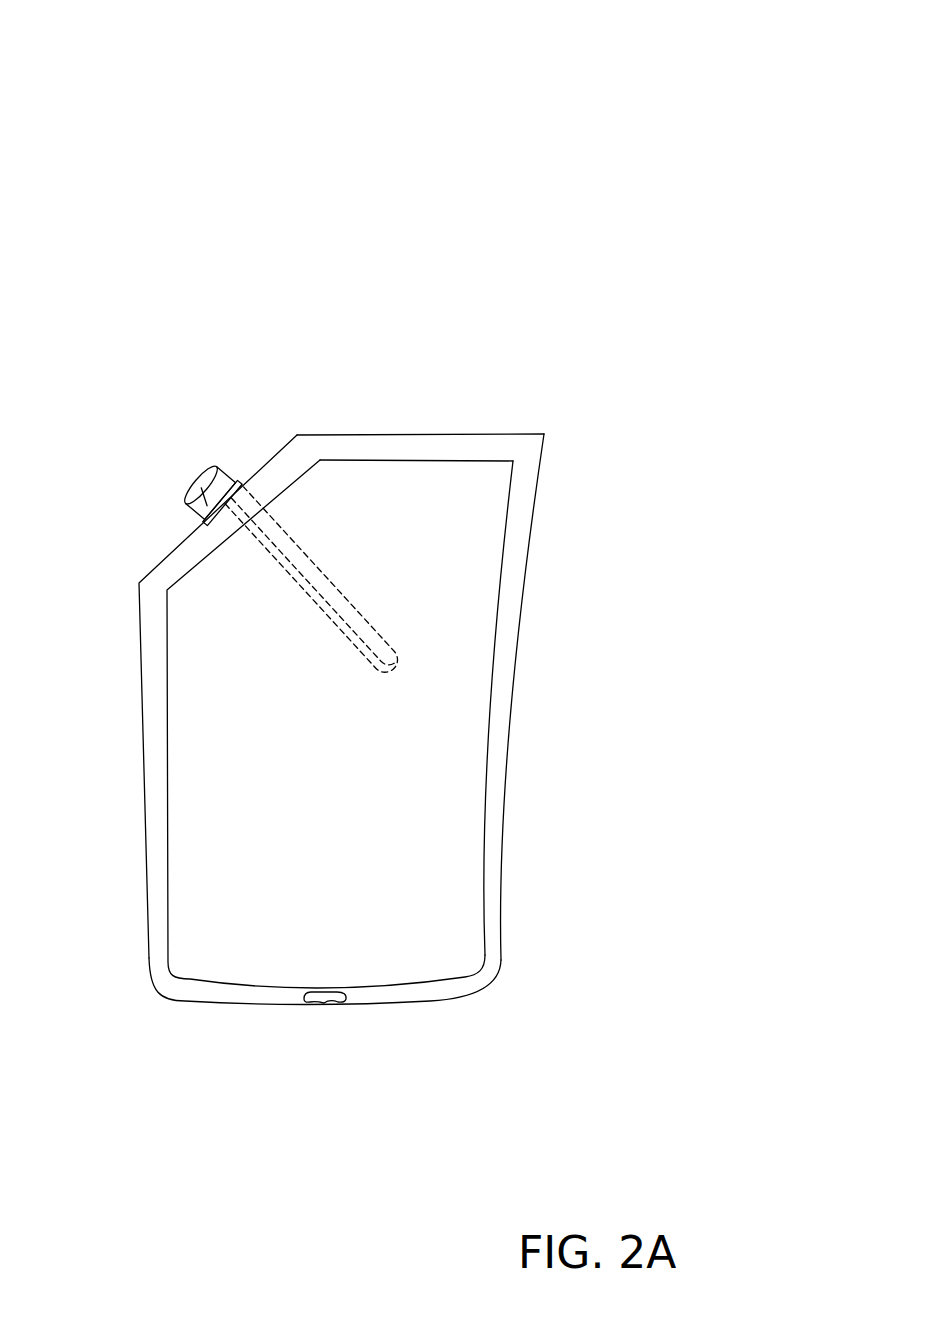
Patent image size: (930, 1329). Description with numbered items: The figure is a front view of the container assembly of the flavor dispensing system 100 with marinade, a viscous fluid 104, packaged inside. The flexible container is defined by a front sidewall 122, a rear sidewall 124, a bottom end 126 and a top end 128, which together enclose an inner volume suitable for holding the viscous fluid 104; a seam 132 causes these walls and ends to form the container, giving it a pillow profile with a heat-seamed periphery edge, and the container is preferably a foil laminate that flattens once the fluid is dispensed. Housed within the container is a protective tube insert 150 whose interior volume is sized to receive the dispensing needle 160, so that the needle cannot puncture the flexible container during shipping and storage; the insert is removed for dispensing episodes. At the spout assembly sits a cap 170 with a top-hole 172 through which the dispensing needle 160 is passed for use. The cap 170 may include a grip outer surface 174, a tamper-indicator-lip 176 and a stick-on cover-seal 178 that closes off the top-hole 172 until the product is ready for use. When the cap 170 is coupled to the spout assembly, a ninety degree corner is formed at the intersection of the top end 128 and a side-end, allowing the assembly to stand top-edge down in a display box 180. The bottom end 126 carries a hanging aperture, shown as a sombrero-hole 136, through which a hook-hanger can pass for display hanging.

The flavor dispensing system 100 is at (572, 99).
The viscous fluid 104 is at (455, 798).
The front sidewall 122 is at (343, 772).
The rear sidewall 124 is at (515, 730).
The bottom end 126 is at (293, 1008).
The top end 128 is at (371, 430).
The seam 132 is at (510, 522).
The sombrero-hole 136 is at (343, 1003).
The protective tube insert 150 is at (403, 652).
The dispensing needle 160 is at (395, 670).
The cap 170 is at (228, 463).
The top-hole 172 is at (190, 482).
The grip outer surface 174 is at (212, 470).
The tamper-indicator-lip 176 is at (197, 522).
The stick-on cover-seal 178 is at (196, 473).
The display box 180 is at (493, 430).